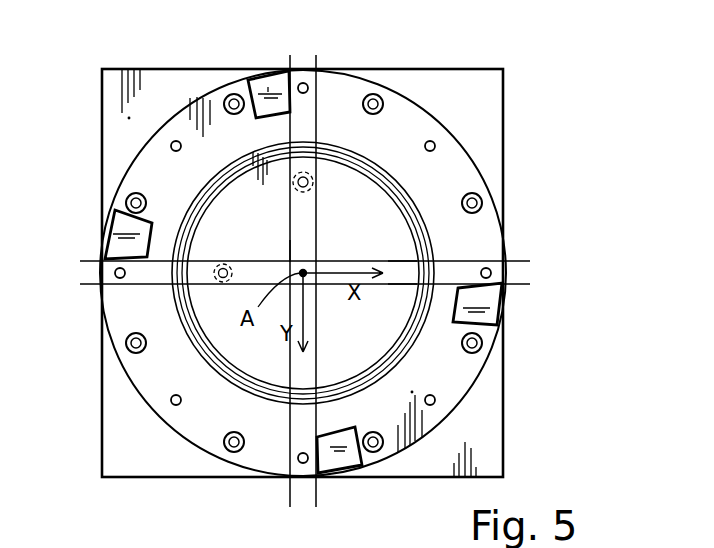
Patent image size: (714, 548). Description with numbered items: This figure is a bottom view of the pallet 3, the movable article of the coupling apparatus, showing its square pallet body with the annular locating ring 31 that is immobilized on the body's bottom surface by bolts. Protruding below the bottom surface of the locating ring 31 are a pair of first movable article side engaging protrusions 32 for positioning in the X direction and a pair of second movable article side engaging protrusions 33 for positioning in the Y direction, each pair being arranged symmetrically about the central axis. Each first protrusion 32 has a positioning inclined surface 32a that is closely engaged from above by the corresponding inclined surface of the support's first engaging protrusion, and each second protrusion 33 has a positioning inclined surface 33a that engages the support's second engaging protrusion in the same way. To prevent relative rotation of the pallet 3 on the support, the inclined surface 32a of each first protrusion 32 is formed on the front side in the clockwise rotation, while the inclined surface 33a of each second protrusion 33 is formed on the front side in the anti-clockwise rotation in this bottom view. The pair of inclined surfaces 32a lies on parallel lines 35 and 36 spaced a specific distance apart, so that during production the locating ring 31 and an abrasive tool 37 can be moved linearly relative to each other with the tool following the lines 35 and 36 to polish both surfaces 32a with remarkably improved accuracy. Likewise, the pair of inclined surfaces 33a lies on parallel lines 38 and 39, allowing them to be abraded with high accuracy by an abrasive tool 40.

The pallet 3 is at (540, 120).
The locating ring 31 is at (466, 395).
The first movable article side engaging protrusion 32 is at (268, 87).
The positioning inclined surface 32a is at (301, 68).
The second movable article side engaging protrusion 33 is at (112, 231).
The positioning inclined surface 33a is at (103, 260).
The parallel line 35 is at (320, 232).
The parallel line 36 is at (290, 250).
The abrasive tool 37 is at (310, 172).
The parallel line 38 is at (390, 258).
The parallel line 39 is at (400, 286).
The abrasive tool 40 is at (216, 281).